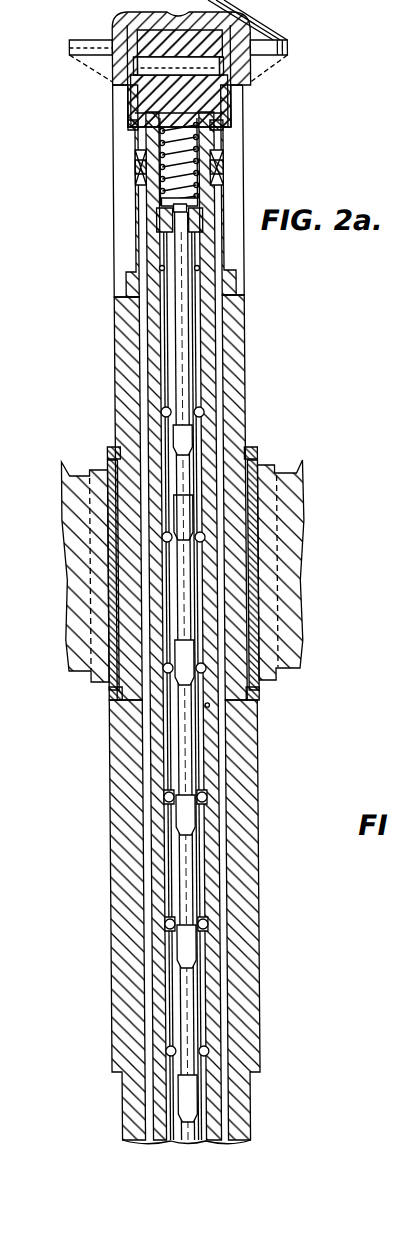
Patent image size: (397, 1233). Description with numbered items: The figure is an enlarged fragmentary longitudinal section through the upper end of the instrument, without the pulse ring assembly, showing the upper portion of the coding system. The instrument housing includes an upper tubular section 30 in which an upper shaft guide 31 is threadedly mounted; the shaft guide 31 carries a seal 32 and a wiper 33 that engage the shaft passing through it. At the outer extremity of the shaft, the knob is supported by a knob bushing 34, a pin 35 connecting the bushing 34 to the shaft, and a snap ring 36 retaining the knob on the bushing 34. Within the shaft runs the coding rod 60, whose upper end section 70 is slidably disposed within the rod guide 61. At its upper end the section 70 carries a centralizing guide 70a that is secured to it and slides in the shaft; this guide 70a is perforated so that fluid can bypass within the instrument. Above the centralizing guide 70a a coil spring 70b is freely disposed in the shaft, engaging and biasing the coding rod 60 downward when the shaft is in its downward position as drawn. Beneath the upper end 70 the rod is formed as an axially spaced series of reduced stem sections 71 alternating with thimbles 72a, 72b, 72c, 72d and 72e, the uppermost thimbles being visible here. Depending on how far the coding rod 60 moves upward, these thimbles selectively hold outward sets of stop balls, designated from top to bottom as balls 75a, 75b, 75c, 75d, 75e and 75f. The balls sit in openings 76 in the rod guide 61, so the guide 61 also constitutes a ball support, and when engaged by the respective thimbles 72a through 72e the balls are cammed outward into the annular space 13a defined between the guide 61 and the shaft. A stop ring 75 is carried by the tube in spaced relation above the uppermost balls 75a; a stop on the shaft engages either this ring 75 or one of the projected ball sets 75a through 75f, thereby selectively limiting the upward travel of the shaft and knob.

The annular space 13a is at (208, 705).
The upper tubular section 30 is at (237, 352).
The upper shaft guide 31 is at (245, 177).
The seal means 32 is at (138, 188).
The wiper means 33 is at (223, 157).
The knob bushing 34 is at (222, 112).
The pin 35 is at (219, 67).
The snap ring 36 is at (130, 123).
The coding rod 60 is at (193, 328).
The rod guide 61 is at (198, 424).
The upper end section of coding rod 70 is at (188, 297).
The centralizing guide 70a is at (158, 217).
The coil spring 70b is at (217, 143).
The reduced stem sections 71 is at (185, 465).
The thimble 72a is at (193, 513).
The thimble 72b is at (205, 655).
The thimble 72c is at (190, 816).
The thimble 72d is at (196, 956).
The thimble 72e is at (195, 1098).
The stop ring 75 is at (200, 268).
The stop balls 75a is at (161, 412).
The stop balls 75b is at (161, 538).
The stop balls 75c is at (163, 672).
The stop balls 75d is at (161, 797).
The stop balls 75e is at (163, 926).
The stop balls 75f is at (163, 1054).
The openings 76 is at (199, 794).